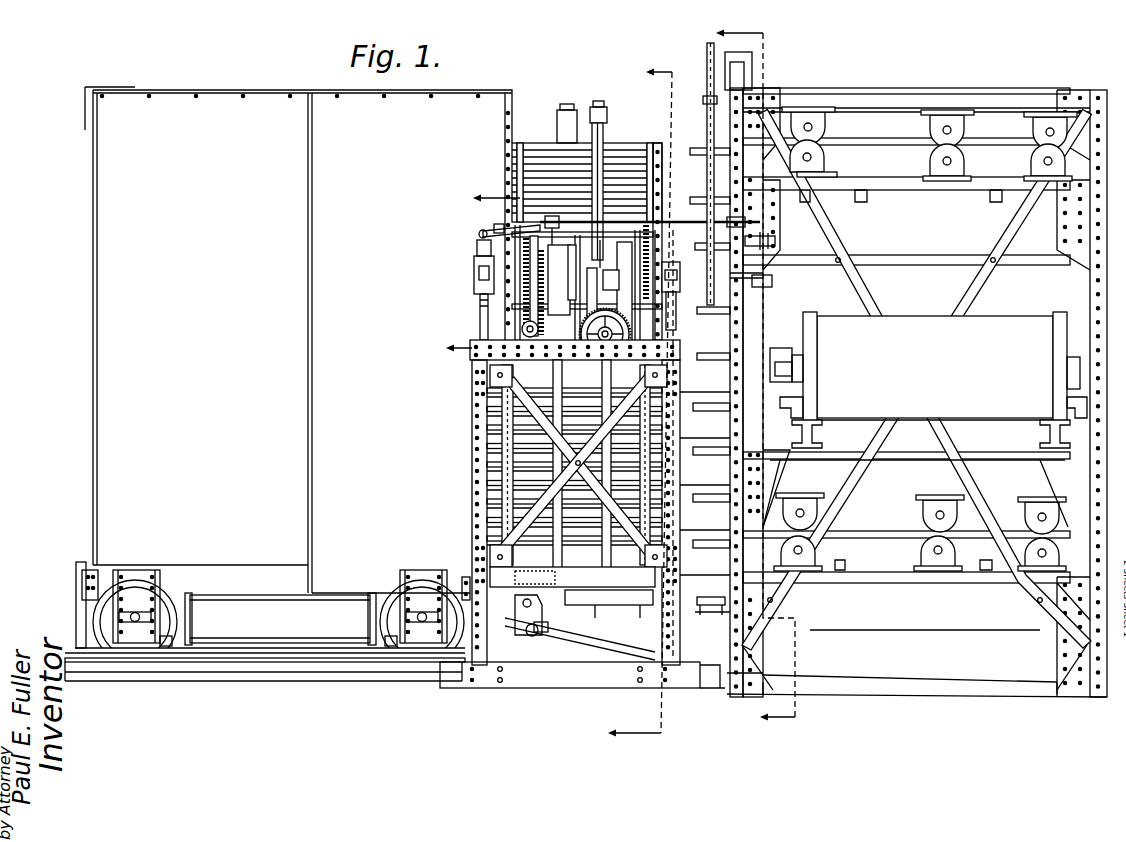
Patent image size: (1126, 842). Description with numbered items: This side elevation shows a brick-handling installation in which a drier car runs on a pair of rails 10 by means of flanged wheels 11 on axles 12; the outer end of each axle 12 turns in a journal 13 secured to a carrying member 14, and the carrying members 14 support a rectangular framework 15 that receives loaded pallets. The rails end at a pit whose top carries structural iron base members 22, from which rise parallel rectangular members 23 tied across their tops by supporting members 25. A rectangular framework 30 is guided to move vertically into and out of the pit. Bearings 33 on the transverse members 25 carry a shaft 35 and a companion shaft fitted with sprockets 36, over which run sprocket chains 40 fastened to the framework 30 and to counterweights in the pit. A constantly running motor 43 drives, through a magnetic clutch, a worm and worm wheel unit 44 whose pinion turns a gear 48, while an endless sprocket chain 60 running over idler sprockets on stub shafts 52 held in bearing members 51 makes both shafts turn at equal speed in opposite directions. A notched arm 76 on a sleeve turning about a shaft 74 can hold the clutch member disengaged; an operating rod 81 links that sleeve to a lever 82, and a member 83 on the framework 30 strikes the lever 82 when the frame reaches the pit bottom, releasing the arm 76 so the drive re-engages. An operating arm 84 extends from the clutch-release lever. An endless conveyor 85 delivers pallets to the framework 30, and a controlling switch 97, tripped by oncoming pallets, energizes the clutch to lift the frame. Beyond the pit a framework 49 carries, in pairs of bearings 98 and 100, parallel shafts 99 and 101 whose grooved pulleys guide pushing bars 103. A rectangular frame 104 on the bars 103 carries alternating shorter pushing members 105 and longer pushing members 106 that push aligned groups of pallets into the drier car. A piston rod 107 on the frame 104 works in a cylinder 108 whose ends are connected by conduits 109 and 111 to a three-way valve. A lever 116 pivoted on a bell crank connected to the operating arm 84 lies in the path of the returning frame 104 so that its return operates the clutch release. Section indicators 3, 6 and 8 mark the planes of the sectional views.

The section line 3- 3 is at (631, 401).
The section line 6- 6 is at (745, 375).
The section line 8- 8 is at (475, 275).
The rails 10 is at (265, 676).
The flanged wheels 11 is at (165, 640).
The axle 12 is at (135, 612).
The journal 13 is at (135, 623).
The carrying member 14 is at (413, 611).
The rectangular framework 15 is at (125, 252).
The structural iron base members 22 is at (565, 676).
The rectangular members 23 is at (478, 521).
The supporting members 25 is at (495, 352).
The rectangular framework 30 is at (637, 149).
The bearings 33 is at (476, 275).
The shaft 35 is at (690, 286).
The sprockets 36 is at (520, 640).
The sprocket chains 40 is at (500, 448).
The motor 43 is at (622, 344).
The worm and worm wheel unit 44 is at (650, 230).
The gear 48 is at (575, 348).
The framework 49 is at (1096, 247).
The bearing members 51 is at (747, 60).
The stub shafts 52 is at (707, 62).
The endless sprocket chain 60 is at (712, 100).
The shaft 74 is at (479, 235).
The radially extending arm 76 is at (496, 229).
The operating rod 81 is at (490, 563).
The lever 82 is at (580, 580).
The member 83 is at (600, 140).
The operating arm 84 is at (555, 222).
The endless conveyor 85 is at (696, 604).
The controlling switch 97 is at (534, 645).
The bearings 98 is at (937, 117).
The shaft 99 is at (808, 124).
The bearing 100 is at (937, 168).
The shaft 101 is at (817, 160).
The bar 103 is at (838, 141).
The rectangular frame 104 is at (770, 242).
The pushing members 105 is at (785, 351).
The pushing members 106 is at (758, 282).
The piston rod 107 is at (797, 357).
The cylinder 108 is at (936, 380).
The conduit 109 is at (797, 406).
The conduit 111 is at (1077, 408).
The lever 116 is at (813, 172).